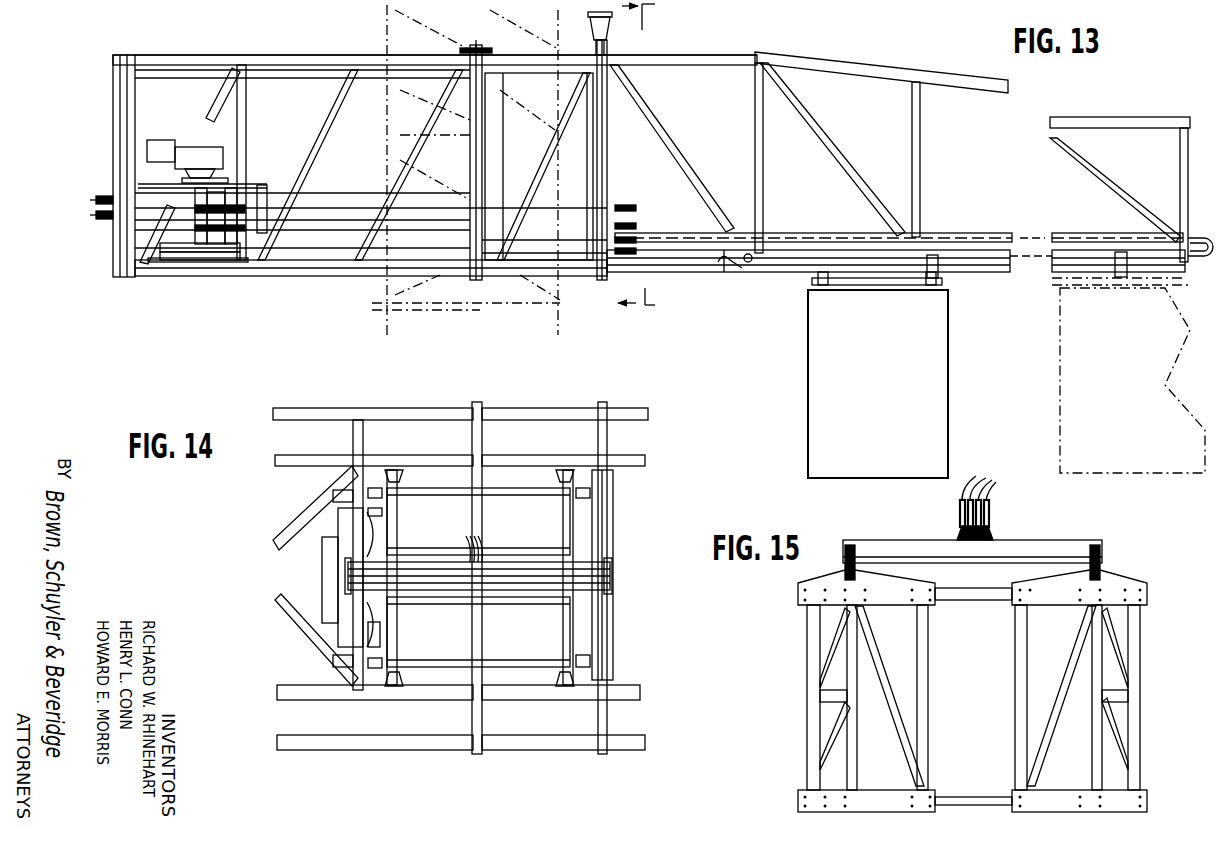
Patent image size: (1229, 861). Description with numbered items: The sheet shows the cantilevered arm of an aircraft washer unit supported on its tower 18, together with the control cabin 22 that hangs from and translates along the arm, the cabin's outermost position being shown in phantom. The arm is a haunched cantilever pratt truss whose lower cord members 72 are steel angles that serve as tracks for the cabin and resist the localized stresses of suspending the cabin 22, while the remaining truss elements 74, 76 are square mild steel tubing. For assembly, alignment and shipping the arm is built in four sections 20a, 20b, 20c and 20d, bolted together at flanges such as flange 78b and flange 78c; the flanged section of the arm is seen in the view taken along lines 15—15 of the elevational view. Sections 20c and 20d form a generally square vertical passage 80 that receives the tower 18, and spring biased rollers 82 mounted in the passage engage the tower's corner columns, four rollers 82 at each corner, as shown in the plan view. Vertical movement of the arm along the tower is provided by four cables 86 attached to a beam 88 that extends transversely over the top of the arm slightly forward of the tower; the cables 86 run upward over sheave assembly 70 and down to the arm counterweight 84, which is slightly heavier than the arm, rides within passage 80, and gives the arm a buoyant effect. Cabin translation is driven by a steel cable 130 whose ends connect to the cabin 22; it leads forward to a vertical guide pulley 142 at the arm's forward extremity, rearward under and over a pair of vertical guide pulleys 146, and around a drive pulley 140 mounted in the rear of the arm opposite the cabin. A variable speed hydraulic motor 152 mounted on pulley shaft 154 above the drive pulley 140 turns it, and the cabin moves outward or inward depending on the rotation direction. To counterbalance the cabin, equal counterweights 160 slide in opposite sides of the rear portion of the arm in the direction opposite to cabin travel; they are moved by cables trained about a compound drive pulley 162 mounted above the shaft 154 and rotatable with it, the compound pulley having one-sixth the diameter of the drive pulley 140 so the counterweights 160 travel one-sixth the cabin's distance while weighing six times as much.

In FIG. 13, the section lines 15— 15 is at (636, 154).
In FIG. 13, the tower 18 is at (382, 300).
In FIG. 14, the tower 18 is at (560, 628).
In FIG. 13, the arm section 20a is at (1140, 102).
In FIG. 13, the arm section 20b is at (782, 56).
In FIG. 13, the arm section 20c is at (554, 44).
In FIG. 14, the arm section 20c is at (560, 398).
In FIG. 13, the arm section 20d is at (258, 54).
In FIG. 14, the arm section 20d is at (418, 398).
In FIG. 13, the control cabin 22 is at (886, 408).
In FIG. 14, the sheave assembly 70 is at (538, 566).
In FIG. 13, the lower cord members 72 is at (702, 274).
In FIG. 13, the truss elements 74 is at (762, 140).
In FIG. 13, the truss elements 76 is at (902, 50).
In FIG. 13, the flange 78b is at (604, 278).
In FIG. 15, the flange 78b is at (1064, 602).
In FIG. 13, the flange 78c is at (474, 280).
In FIG. 14, the vertical passage 80 is at (514, 470).
In FIG. 14, the spring biased rollers 82 is at (566, 466).
In FIG. 14, the arm counterweight 84 is at (344, 606).
In FIG. 14, the cables 86 is at (464, 546).
In FIG. 15, the cables 86 is at (987, 494).
In FIG. 13, the beam 88 is at (590, 28).
In FIG. 15, the beam 88 is at (1014, 544).
In FIG. 13, the steel cable 130 is at (1022, 238).
In FIG. 13, the drive pulley 140 is at (192, 262).
In FIG. 13, the vertical guide pulley 142 is at (1220, 236).
In FIG. 13, the vertical guide pulleys 146 is at (752, 266).
In FIG. 13, the hydraulic motor 152 is at (196, 146).
In FIG. 13, the pulley shaft 154 is at (196, 200).
In FIG. 13, the counterweights 160 is at (563, 224).
In FIG. 13, the compound drive pulley 162 is at (218, 196).